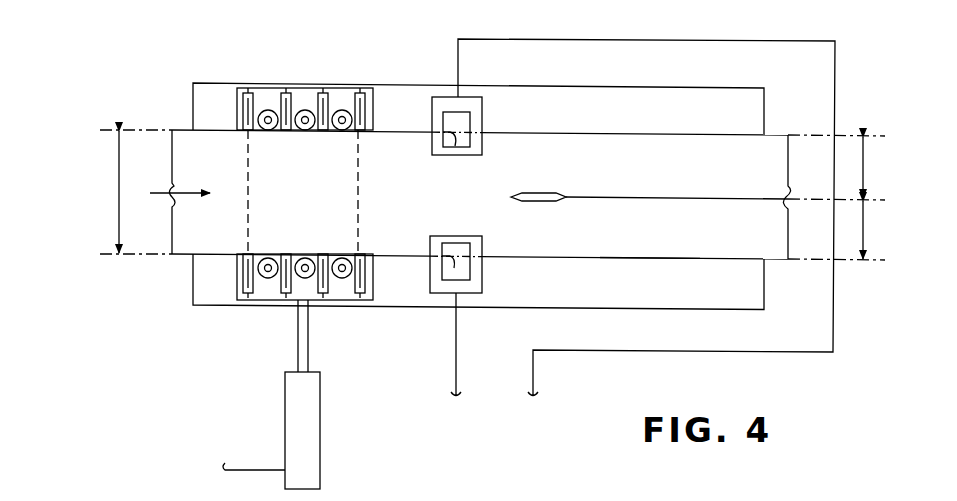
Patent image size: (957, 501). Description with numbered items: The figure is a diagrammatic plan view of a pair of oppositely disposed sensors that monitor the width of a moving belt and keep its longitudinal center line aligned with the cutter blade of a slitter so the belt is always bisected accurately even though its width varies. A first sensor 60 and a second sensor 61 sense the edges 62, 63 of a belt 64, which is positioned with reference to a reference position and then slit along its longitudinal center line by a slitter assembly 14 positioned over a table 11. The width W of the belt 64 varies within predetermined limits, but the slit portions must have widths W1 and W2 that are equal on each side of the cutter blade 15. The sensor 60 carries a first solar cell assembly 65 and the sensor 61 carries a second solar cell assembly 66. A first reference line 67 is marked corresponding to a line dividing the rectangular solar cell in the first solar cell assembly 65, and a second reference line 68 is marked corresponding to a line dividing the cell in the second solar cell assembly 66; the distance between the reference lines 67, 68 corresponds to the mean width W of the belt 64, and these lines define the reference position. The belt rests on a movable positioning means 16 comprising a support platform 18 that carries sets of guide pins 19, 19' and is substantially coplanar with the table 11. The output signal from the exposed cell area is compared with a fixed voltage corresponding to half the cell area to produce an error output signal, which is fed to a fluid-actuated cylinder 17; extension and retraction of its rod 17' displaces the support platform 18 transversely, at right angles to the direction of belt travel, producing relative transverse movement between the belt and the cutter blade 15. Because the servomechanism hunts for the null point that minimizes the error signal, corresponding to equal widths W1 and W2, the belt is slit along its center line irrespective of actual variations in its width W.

The table 11 is at (193, 117).
The slitter assembly 14 is at (532, 212).
The cutter blade 15 is at (551, 203).
The movable positioning means 16 is at (294, 149).
The fluid-actuated cylinder 17 is at (271, 430).
The rod 17' is at (269, 338).
The support platform 18 is at (299, 295).
The guide pins 19 is at (305, 87).
The guide pins 19' is at (289, 297).
The first sensor 60 is at (610, 207).
The second sensor 61 is at (445, 306).
The edge 62 is at (398, 130).
The edge 63 is at (632, 259).
The belt 64 is at (182, 262).
The first solar cell assembly 65 is at (470, 124).
The second solar cell assembly 66 is at (470, 250).
The first reference line 67 is at (448, 136).
The second reference line 68 is at (447, 253).
The width of the belt W is at (117, 192).
The width of slit portion W1 is at (859, 167).
The width of slit portion W2 is at (859, 230).